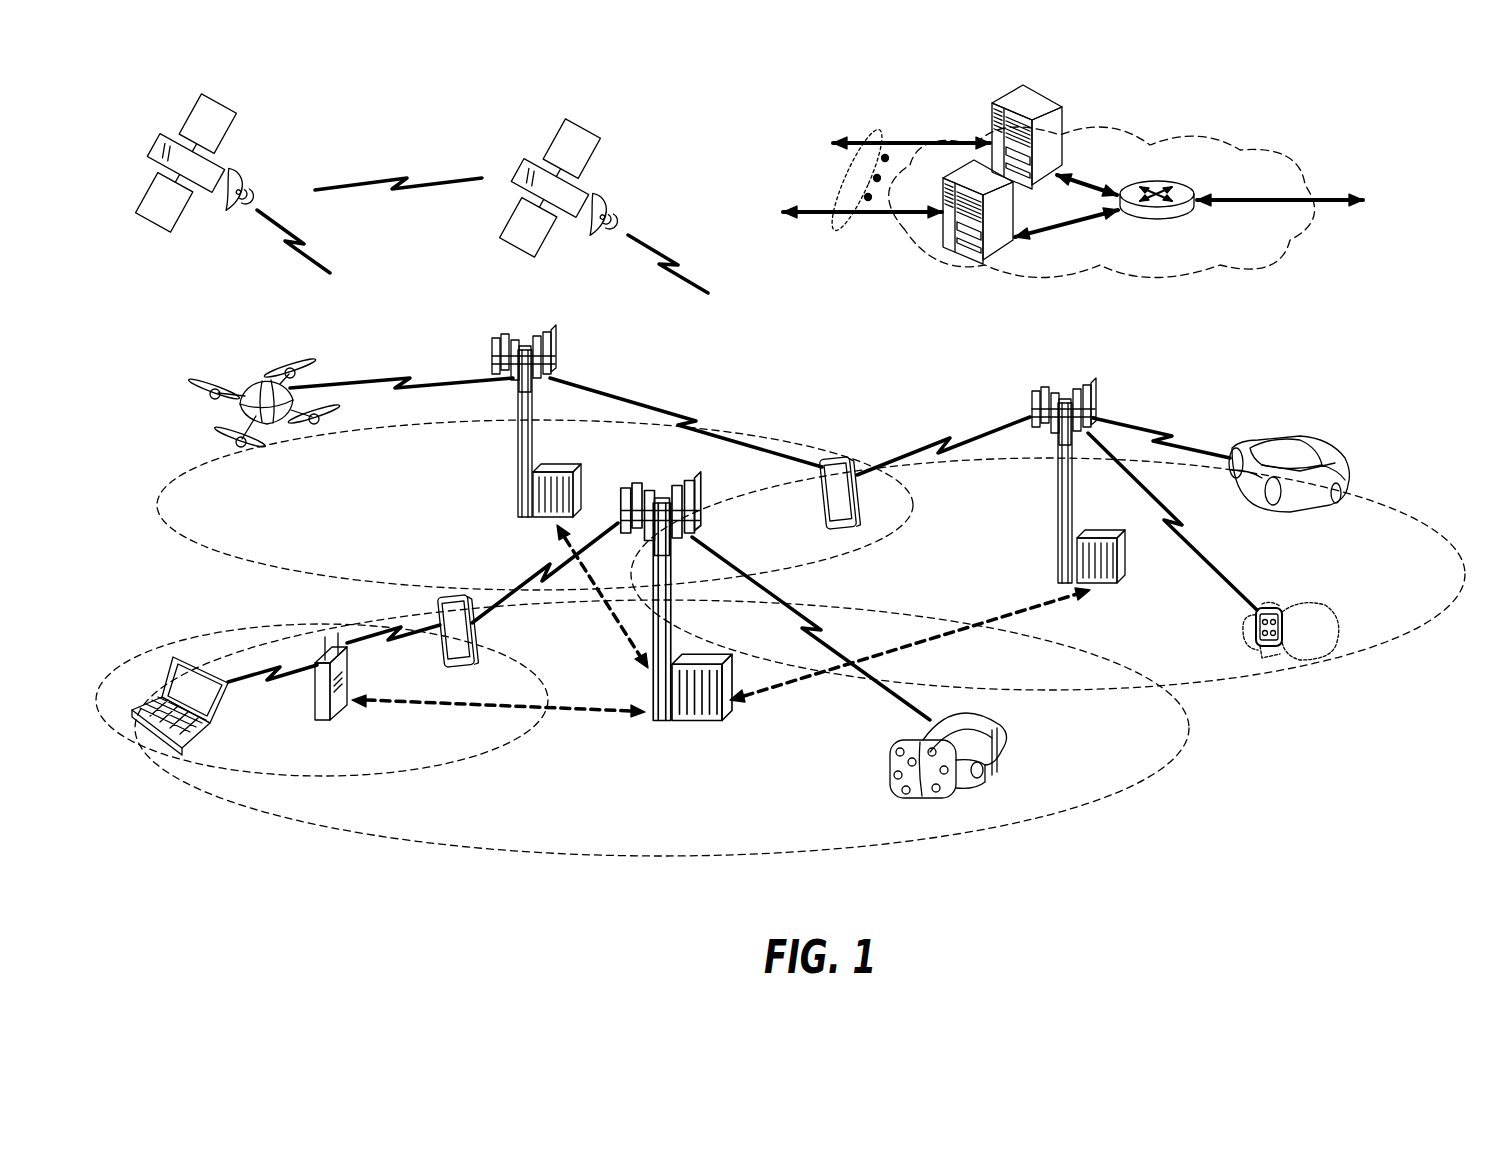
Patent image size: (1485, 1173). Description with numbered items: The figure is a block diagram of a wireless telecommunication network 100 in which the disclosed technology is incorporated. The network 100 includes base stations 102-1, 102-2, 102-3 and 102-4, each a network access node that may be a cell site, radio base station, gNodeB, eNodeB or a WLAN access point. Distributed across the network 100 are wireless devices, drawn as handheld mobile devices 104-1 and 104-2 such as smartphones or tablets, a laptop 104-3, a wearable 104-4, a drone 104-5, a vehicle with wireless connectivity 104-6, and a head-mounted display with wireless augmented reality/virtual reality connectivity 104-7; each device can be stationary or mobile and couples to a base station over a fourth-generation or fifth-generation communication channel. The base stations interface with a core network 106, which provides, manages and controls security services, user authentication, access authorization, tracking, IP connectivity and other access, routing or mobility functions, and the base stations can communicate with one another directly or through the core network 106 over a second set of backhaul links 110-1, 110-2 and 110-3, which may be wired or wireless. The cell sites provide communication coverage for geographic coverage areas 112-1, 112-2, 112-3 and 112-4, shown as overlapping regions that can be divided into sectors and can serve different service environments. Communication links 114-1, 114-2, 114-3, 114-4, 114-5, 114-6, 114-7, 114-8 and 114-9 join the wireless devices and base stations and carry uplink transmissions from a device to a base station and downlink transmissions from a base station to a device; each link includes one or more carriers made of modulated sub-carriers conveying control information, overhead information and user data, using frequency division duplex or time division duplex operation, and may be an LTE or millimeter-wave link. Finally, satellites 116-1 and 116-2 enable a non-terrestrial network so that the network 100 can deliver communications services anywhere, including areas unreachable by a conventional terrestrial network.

The wireless telecommunication network 100 is at (1395, 153).
The base station 102-1 is at (661, 722).
The base station 102-2 is at (515, 462).
The base station 102-3 is at (1055, 503).
The base station 102-4 is at (320, 707).
The handheld mobile device 104-1 is at (475, 646).
The handheld mobile device 104-2 is at (822, 500).
The laptop 104-3 is at (160, 742).
The wearable 104-4 is at (1272, 610).
The drone 104-5 is at (276, 428).
The vehicle with wireless connectivity 104-6 is at (1312, 450).
The head-mounted display with wireless AR/VR connectivity 104-7 is at (1012, 733).
The core network 106 is at (1188, 268).
The backhaul link 110-1 is at (390, 703).
The backhaul link 110-2 is at (977, 625).
The backhaul link 110-3 is at (620, 623).
The geographic coverage area 112-1 is at (585, 857).
The geographic coverage area 112-2 is at (455, 765).
The geographic coverage area 112-3 is at (210, 575).
The geographic coverage area 112-4 is at (1420, 488).
The communication link 114-1 is at (830, 626).
The communication link 114-2 is at (545, 567).
The communication link 114-3 is at (237, 683).
The communication link 114-4 is at (391, 647).
The communication link 114-5 is at (397, 378).
The communication link 114-6 is at (692, 413).
The communication link 114-7 is at (952, 438).
The communication link 114-8 is at (1192, 540).
The communication link 114-9 is at (1158, 428).
The satellite 116-1 is at (245, 172).
The satellite 116-2 is at (607, 197).